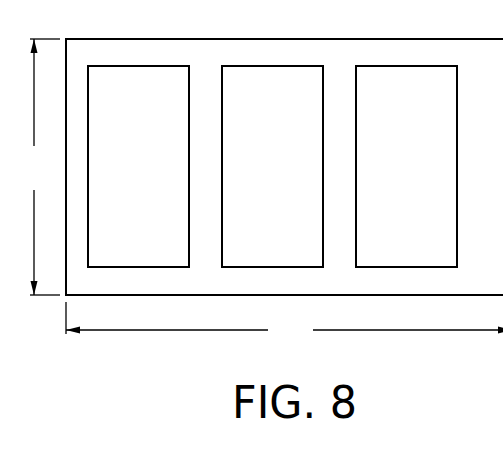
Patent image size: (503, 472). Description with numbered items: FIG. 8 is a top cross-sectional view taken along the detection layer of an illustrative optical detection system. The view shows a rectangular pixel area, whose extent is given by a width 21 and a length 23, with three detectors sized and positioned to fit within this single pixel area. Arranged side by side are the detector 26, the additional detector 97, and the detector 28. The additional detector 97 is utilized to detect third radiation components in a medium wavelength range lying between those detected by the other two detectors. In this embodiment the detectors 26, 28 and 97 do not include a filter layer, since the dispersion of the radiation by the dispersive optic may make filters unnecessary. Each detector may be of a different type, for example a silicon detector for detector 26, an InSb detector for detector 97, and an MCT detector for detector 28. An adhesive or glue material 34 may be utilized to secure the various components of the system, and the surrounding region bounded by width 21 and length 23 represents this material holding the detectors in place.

The adhesive or glue material 34 is at (502, 113).
The detector 26 is at (153, 180).
The additional detector 97 is at (254, 181).
The detector 28 is at (387, 181).
The length 23 is at (38, 167).
The width 21 is at (284, 324).